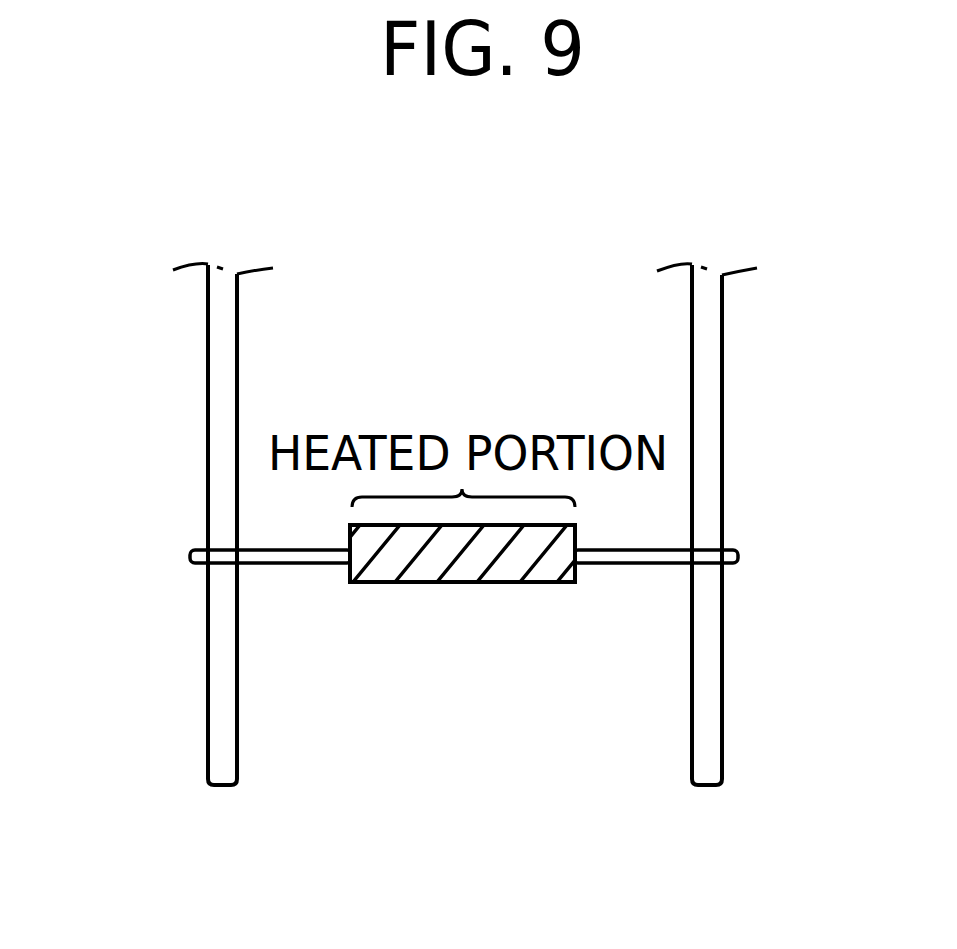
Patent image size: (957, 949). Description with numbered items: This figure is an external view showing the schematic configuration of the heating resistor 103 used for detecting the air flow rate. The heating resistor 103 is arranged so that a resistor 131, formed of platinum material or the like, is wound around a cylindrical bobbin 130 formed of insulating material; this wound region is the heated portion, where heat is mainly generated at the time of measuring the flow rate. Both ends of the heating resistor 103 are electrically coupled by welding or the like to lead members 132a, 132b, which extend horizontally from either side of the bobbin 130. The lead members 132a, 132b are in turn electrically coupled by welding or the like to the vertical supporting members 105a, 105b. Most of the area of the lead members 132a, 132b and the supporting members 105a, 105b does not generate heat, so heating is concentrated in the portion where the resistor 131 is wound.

The heating resistor 103 is at (372, 583).
The supporting member 105a is at (215, 787).
The supporting member 105b is at (700, 787).
The cylindrical bobbin 130 is at (535, 583).
The resistor 131 is at (460, 583).
The lead member 132a is at (200, 550).
The lead member 132b is at (728, 550).